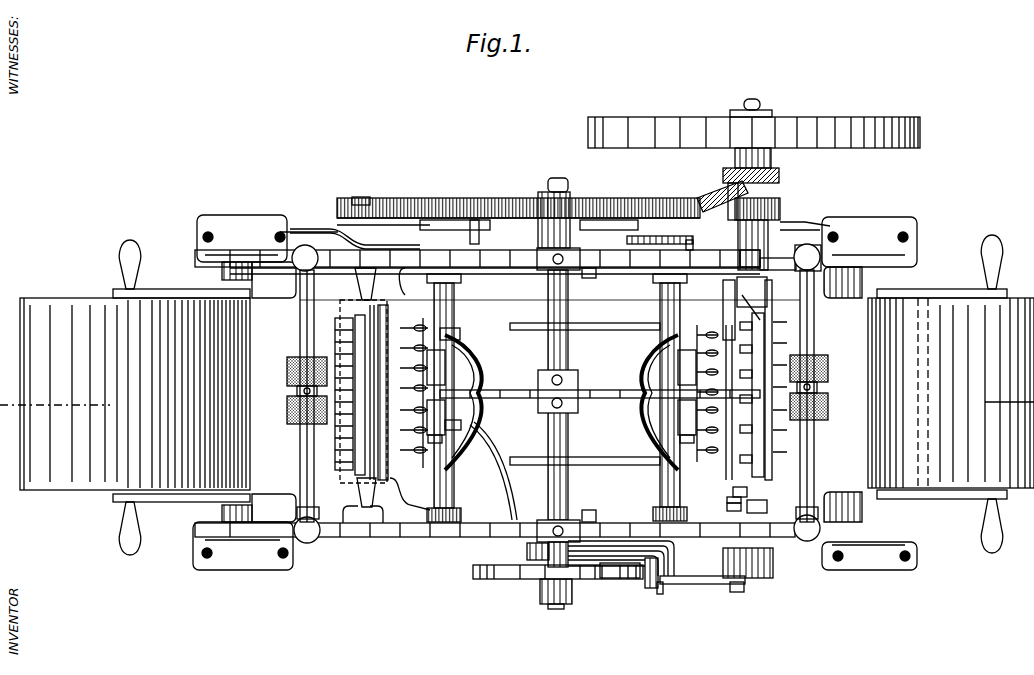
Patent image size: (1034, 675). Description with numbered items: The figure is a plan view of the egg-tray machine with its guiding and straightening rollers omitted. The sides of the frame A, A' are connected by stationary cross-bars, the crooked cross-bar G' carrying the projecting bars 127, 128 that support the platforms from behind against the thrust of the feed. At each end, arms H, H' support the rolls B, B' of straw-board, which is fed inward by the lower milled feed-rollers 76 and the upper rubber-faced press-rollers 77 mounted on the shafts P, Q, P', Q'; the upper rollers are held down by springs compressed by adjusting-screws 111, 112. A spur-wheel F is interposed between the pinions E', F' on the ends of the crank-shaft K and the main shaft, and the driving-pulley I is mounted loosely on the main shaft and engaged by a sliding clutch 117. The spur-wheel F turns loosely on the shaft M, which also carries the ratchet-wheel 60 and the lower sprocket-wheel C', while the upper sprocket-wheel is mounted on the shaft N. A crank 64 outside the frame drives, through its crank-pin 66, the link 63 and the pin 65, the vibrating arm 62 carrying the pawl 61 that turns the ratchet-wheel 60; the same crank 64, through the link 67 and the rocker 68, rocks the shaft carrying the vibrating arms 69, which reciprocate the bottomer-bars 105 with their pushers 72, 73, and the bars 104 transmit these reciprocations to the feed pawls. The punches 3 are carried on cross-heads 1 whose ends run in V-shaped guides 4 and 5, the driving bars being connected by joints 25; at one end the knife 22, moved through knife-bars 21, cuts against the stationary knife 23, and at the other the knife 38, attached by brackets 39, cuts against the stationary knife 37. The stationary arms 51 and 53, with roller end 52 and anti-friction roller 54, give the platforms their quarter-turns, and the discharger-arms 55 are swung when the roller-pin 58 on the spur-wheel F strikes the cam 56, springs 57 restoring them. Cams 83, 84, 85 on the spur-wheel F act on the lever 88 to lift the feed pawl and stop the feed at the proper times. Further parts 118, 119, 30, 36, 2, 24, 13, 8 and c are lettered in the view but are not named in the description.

The driving-pulley I is at (920, 136).
The sliding clutch 117 is at (771, 160).
The worm collar 118 is at (779, 180).
The cam 83 is at (720, 198).
The pinion F' is at (760, 226).
The arm 119 is at (815, 226).
The spur-wheel F is at (518, 201).
The crank-shaft K is at (361, 197).
The cam 84 is at (447, 220).
The roller-pin 58 is at (479, 236).
The cam 85 is at (600, 220).
The cam 56 is at (660, 236).
The springs 57 is at (689, 240).
The pinion E' is at (355, 224).
The shaft N is at (570, 437).
The frame side A' is at (495, 274).
The vibrating arms 69 is at (585, 497).
The V-shaped guide 4 is at (750, 258).
The frame side A is at (495, 542).
The adjusting-screw 112 is at (282, 530).
The bars 104 is at (295, 218).
The adjusting-screw 111 is at (797, 570).
The lever 88 is at (798, 257).
The roll of straw-board B is at (125, 394).
The roll of straw-board B' is at (951, 393).
The arm H' is at (181, 397).
The arm H is at (942, 394).
The feed-roller shaft P is at (310, 396).
The feed-roller shaft P' is at (818, 396).
The lower feed-roller 76 is at (557, 389).
The upper press-roller 77 is at (818, 422).
The feed-roller shaft Q is at (291, 478).
The feed-roller shaft Q' is at (829, 487).
The cross-bar G' is at (557, 398).
The lower sprocket-wheel C' is at (600, 383).
The discharger-arms 55 is at (614, 450).
The lower stationary arm 53 is at (478, 306).
The anti-friction roller 54 is at (478, 341).
The roller end 52 is at (470, 435).
The upper stationary arm 51 is at (505, 455).
The knife 22 is at (735, 483).
The brackets 39 is at (392, 478).
The projecting bar 127 is at (565, 383).
The projecting bar 128 is at (573, 432).
The stationary knife 37 is at (388, 345).
The knife 38 is at (382, 308).
The rack 30 is at (335, 435).
The bottomer 73 is at (335, 480).
The lever 36 is at (386, 505).
The bottomer-bars 105 is at (550, 390).
The bottomer 72 is at (772, 300).
The plate 2 is at (758, 395).
The cross-heads 1 is at (746, 402).
The punches 3 is at (745, 392).
The block 24 is at (743, 430).
The block 13 is at (744, 489).
The knife-bars 21 is at (727, 500).
The joints 25 is at (760, 500).
The upper stationary knife 23 is at (716, 310).
The lever 8 is at (753, 301).
The V-shaped guide 5 is at (751, 518).
The pin c is at (571, 474).
The ratchet-wheel 60 is at (505, 579).
The shaft M is at (557, 609).
The rocker 68 is at (527, 552).
The link 67 is at (633, 558).
The pawl 61 is at (608, 578).
The vibrating arm 62 is at (650, 588).
The pin 65 is at (660, 594).
The link 63 is at (690, 584).
The crank 64 is at (765, 578).
The crank-pin 66 is at (737, 592).